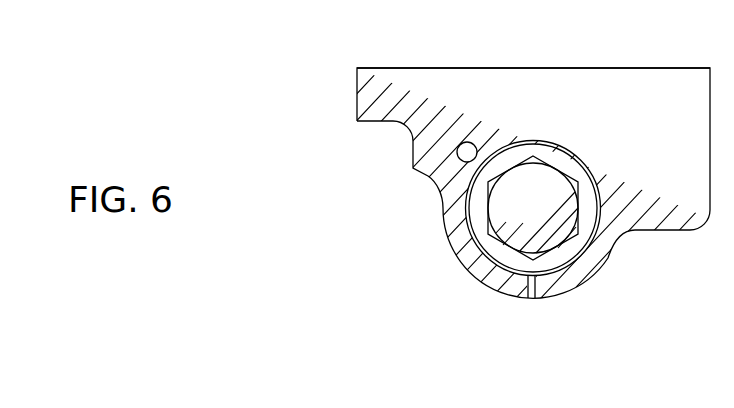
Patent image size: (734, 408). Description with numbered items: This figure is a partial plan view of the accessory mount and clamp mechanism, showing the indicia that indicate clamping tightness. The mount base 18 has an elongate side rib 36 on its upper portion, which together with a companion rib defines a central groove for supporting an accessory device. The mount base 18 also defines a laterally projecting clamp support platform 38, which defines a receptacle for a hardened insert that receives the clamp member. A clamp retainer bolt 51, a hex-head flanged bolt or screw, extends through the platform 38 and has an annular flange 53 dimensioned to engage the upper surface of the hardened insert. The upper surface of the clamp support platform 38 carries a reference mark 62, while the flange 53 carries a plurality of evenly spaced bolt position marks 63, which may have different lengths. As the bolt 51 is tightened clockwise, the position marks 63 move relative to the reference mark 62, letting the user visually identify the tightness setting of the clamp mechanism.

The mount base 18 is at (336, 89).
The side rib 36 is at (651, 68).
The clamp support platform 38 is at (458, 241).
The clamp retainer bolt 51 is at (506, 210).
The annular flange 53 is at (583, 260).
The reference mark 62 is at (514, 300).
The bolt position marks 63 is at (567, 253).